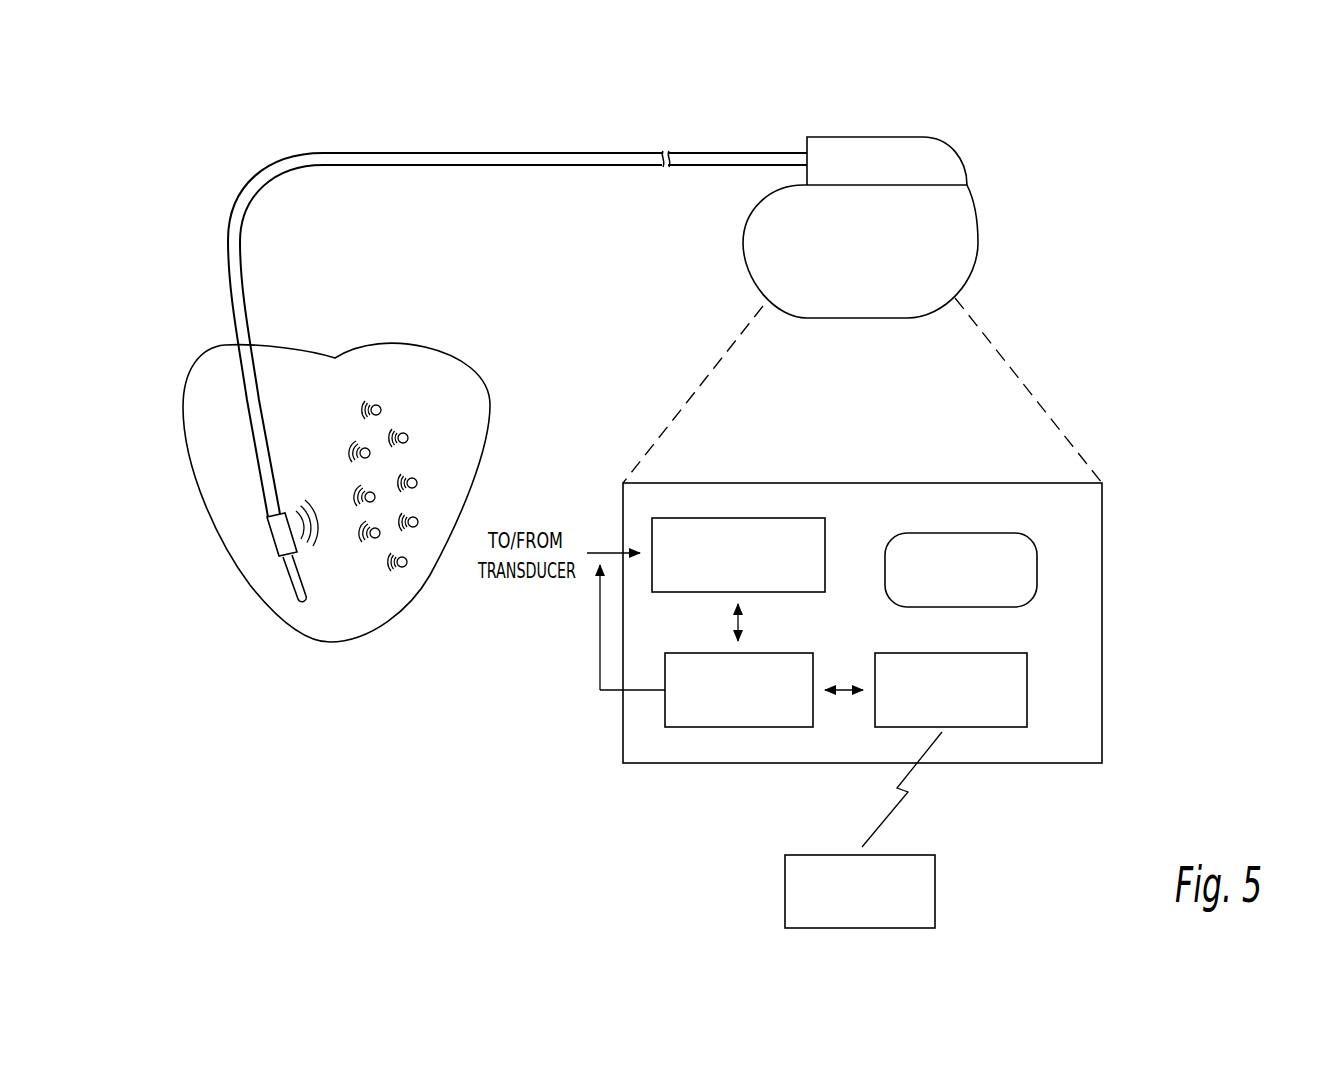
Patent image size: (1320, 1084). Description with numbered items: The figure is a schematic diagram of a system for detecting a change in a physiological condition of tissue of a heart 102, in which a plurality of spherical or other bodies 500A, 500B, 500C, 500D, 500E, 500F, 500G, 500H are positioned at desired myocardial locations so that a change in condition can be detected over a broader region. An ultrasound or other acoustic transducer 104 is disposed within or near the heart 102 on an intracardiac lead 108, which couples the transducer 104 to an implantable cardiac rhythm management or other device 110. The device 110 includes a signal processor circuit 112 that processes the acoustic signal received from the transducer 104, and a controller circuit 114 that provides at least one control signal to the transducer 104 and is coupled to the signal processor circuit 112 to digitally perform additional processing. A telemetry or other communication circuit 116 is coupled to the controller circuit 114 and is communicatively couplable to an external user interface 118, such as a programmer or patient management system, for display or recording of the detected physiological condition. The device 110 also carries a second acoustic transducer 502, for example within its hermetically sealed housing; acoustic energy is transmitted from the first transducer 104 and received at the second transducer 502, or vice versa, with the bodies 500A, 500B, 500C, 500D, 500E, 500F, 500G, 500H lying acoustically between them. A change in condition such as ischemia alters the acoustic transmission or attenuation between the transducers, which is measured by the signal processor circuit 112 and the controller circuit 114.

The heart 102 is at (485, 392).
The acoustic transducer 104 is at (268, 530).
The intracardiac lead 108 is at (325, 153).
The implantable device 110 is at (973, 207).
The signal processor circuit 112 is at (826, 535).
The controller circuit 114 is at (816, 663).
The communication circuit 116 is at (1028, 670).
The external user interface 118 is at (937, 872).
The second acoustic transducer 502 is at (1038, 550).
The spherical body 500A is at (381, 409).
The spherical body 500B is at (408, 437).
The spherical body 500C is at (418, 481).
The spherical body 500D is at (419, 520).
The spherical body 500E is at (404, 567).
The spherical body 500F is at (372, 539).
The spherical body 500G is at (366, 494).
The spherical body 500H is at (361, 450).